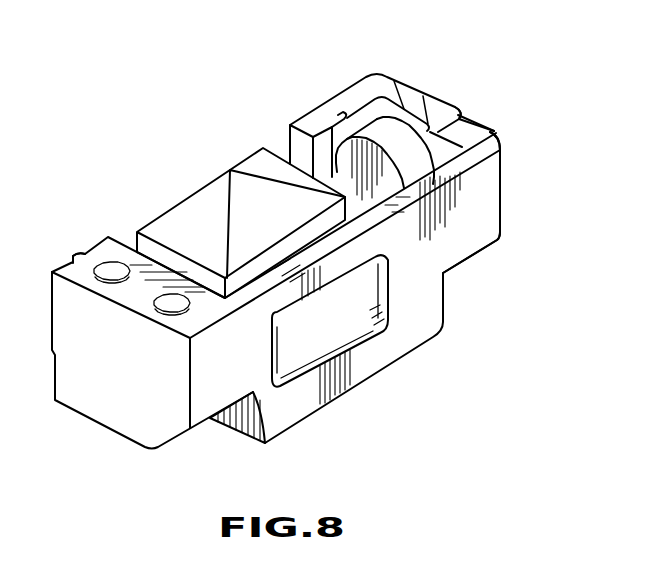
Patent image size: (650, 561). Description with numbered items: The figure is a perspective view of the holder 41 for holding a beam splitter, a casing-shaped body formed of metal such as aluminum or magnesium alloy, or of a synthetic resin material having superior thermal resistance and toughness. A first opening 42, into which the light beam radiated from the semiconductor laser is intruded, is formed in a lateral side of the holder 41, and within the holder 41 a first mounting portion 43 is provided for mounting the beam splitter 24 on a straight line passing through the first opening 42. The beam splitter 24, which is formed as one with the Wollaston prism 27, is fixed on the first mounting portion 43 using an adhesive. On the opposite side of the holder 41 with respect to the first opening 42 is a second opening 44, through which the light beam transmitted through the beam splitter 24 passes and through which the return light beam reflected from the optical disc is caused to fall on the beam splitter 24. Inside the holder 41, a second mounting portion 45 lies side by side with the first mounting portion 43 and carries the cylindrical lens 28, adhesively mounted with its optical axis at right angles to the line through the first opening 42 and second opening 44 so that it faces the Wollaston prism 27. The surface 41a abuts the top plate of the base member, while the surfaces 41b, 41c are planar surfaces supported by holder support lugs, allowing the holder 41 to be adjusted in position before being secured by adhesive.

The beam splitter 24 is at (193, 213).
The Wollaston prism 27 is at (232, 172).
The cylindrical lens 28 is at (370, 133).
The holder 41 is at (482, 187).
The surface 41a is at (483, 132).
The surface 41b is at (488, 242).
The surface 41c is at (215, 420).
The first opening 42 is at (302, 152).
The first mounting portion 43 is at (120, 239).
The second opening 44 is at (390, 328).
The second mounting portion 45 is at (340, 118).